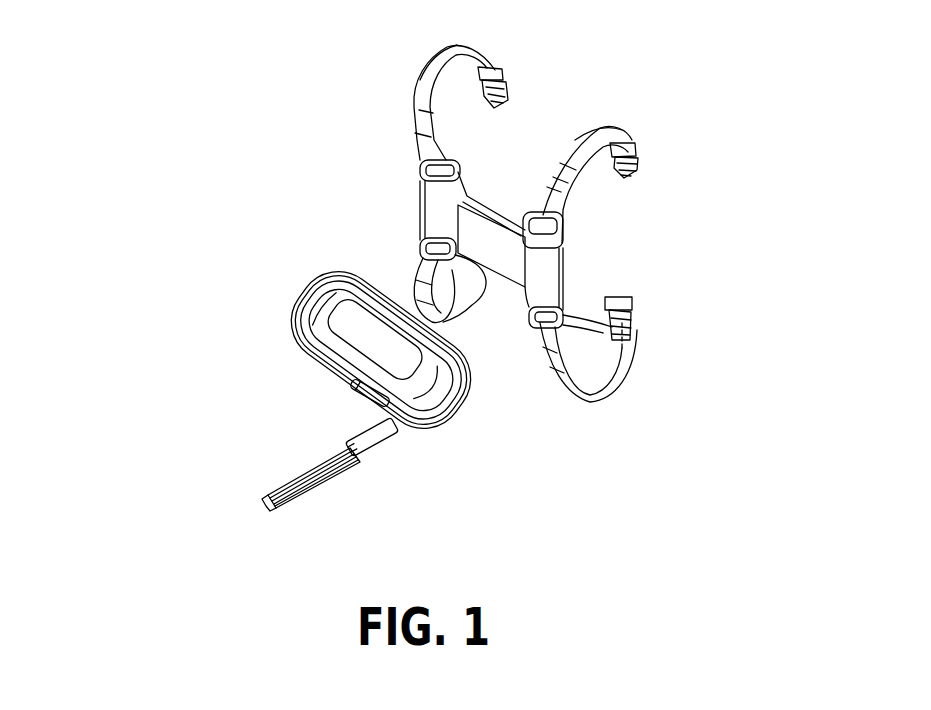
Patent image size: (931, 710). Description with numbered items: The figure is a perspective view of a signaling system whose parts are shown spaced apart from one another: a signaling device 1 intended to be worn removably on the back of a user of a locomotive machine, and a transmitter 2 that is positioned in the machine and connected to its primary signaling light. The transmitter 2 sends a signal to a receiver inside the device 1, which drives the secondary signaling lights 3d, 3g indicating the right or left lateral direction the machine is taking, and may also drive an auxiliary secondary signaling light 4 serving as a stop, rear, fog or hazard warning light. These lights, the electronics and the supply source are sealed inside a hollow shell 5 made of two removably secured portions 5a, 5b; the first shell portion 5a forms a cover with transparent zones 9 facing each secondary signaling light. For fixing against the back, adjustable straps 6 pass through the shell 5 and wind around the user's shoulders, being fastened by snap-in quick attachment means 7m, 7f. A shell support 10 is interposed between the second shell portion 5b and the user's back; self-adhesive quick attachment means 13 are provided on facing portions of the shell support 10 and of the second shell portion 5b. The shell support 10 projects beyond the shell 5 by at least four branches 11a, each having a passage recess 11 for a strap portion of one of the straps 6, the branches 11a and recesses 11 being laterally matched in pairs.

The signaling device 1 is at (566, 275).
The transmitter 2 is at (340, 452).
The secondary signaling light 3d is at (430, 367).
The secondary signaling light 3g is at (320, 332).
The auxiliary secondary signaling light 4 is at (363, 348).
The hollow shell 5 is at (297, 323).
The first shell portion 5a is at (302, 292).
The second shell portion 5b is at (332, 276).
The adjustable strap 6 is at (420, 173).
The quick attachment means 7m is at (503, 67).
The quick attachment means 7f is at (633, 318).
The transparent zones 9 is at (293, 307).
The shell support 10 is at (543, 290).
The passage recess 11 is at (428, 187).
The branches 11a is at (430, 140).
The quick attachment means 13 is at (507, 250).